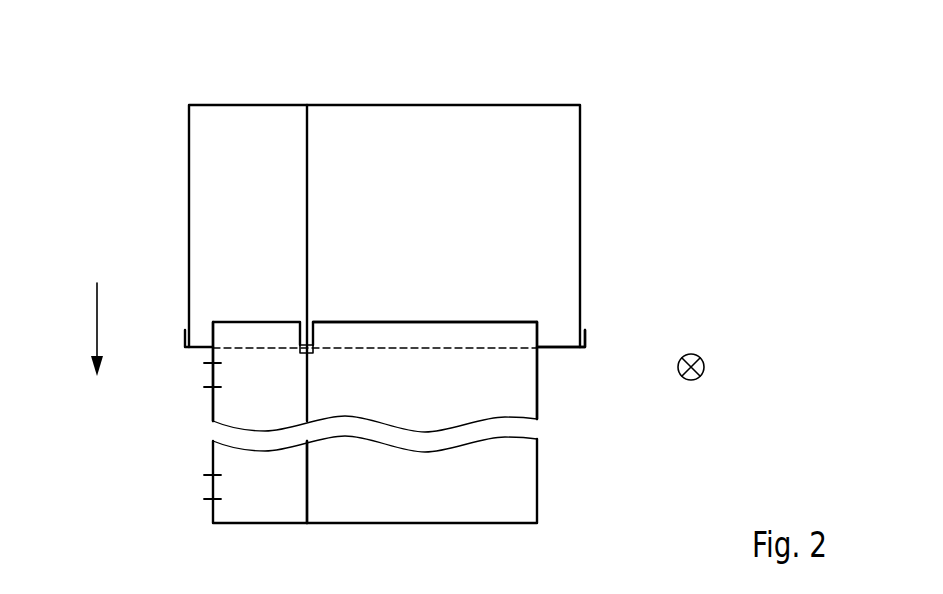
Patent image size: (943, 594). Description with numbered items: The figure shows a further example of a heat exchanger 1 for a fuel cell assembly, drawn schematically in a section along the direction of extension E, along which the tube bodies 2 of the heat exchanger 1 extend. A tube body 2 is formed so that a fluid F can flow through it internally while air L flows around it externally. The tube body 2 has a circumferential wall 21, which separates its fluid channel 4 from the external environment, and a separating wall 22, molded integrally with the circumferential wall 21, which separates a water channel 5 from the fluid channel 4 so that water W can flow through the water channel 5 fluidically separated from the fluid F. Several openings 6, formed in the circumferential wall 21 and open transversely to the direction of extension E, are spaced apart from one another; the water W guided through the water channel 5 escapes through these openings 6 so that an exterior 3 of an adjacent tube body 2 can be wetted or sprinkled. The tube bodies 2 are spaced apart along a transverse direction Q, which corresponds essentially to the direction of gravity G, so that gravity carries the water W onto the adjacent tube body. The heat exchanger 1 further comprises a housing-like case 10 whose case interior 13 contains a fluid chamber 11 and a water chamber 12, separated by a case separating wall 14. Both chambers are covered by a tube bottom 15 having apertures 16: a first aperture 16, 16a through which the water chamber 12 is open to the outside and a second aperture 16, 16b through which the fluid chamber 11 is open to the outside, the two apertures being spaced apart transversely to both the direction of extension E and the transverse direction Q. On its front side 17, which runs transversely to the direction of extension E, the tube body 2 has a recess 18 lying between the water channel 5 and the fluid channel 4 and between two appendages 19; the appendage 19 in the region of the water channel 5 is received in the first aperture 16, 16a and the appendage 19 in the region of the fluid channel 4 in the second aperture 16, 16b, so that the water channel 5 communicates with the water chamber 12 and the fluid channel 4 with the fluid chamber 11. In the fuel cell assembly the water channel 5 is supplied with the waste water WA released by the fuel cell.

The heat exchanger 1 is at (686, 146).
The tube body 2 is at (198, 427).
The exterior 3 is at (555, 390).
The fluid channel 4 is at (436, 400).
The water channel 5 is at (266, 401).
The opening 6 is at (204, 366).
The case 10 is at (596, 222).
The fluid chamber 11 is at (443, 226).
The water chamber 12 is at (248, 226).
The case interior 13 is at (248, 226).
The case separating wall 14 is at (313, 208).
The tube bottom 15 is at (562, 349).
The aperture 16 is at (241, 327).
The first aperture 16a is at (213, 347).
The second aperture 16b is at (537, 348).
The front side 17 is at (372, 320).
The recess 18 is at (313, 343).
The appendage 19 is at (260, 335).
The circumferential wall 21 is at (555, 463).
The separating wall 22 is at (310, 475).
The direction of extension E is at (97, 320).
The air L is at (152, 463).
The transverse direction Q is at (741, 364).
The direction of gravity G is at (705, 367).
The water W is at (248, 226).
The waste water WA is at (280, 174).
The fluid F is at (497, 188).